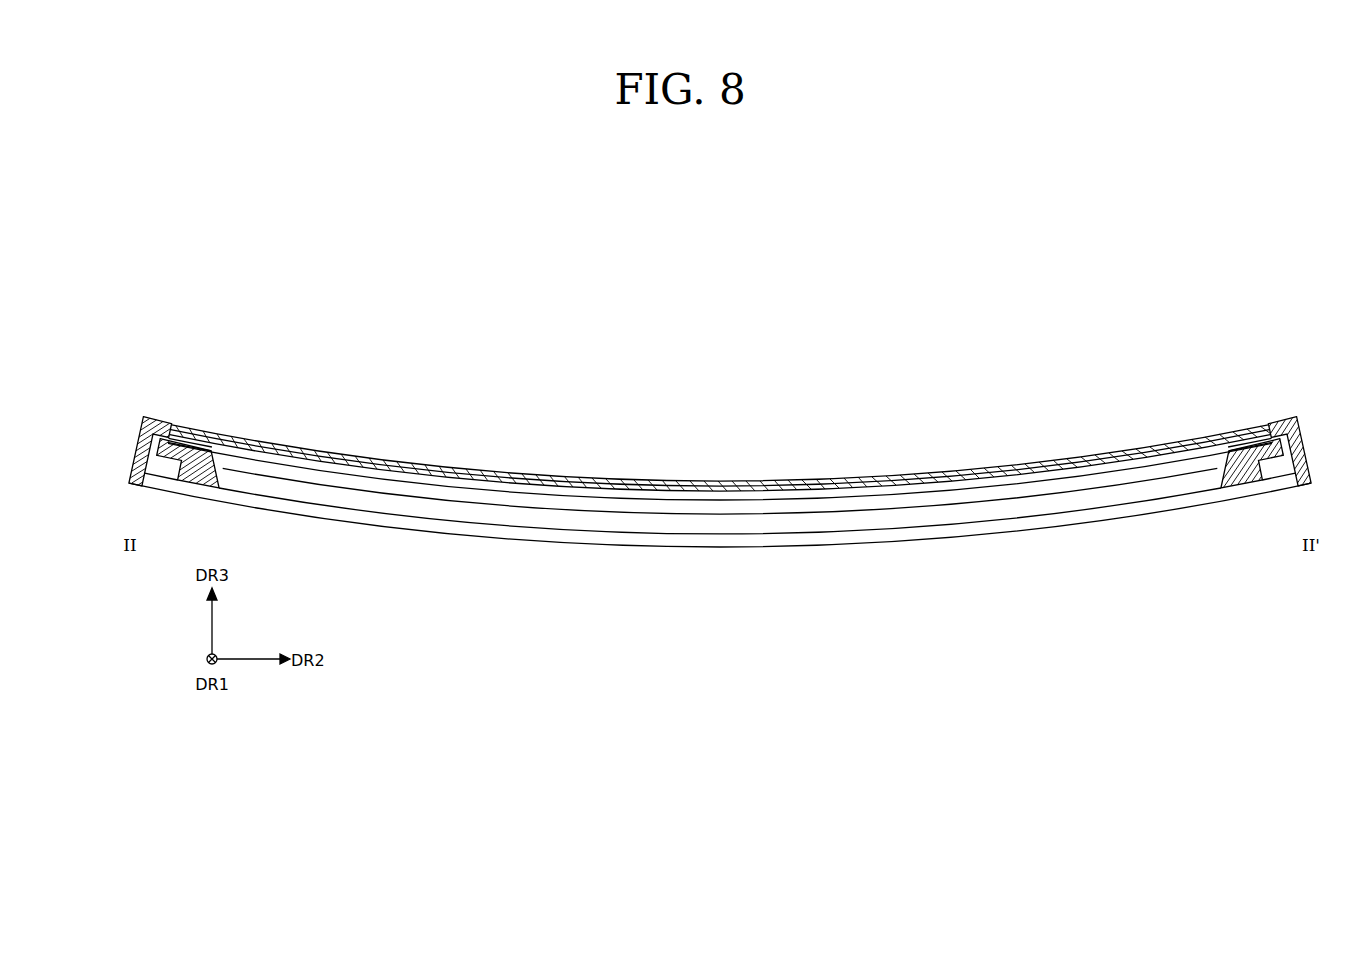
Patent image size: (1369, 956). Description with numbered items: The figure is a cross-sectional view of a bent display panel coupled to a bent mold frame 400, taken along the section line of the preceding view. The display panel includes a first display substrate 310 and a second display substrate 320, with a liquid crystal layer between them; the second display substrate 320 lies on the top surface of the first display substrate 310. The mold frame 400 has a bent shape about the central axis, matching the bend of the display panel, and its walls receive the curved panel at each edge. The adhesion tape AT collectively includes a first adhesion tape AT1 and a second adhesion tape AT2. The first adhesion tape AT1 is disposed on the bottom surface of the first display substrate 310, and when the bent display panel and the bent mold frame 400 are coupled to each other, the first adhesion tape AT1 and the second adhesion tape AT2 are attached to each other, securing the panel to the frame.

The first display substrate 310 is at (548, 476).
The second display substrate 320 is at (634, 484).
The mold frame 400 is at (138, 449).
The adhesion tape AT is at (710, 391).
The first adhesion tape AT1 is at (148, 367).
The second adhesion tape AT2 is at (176, 433).